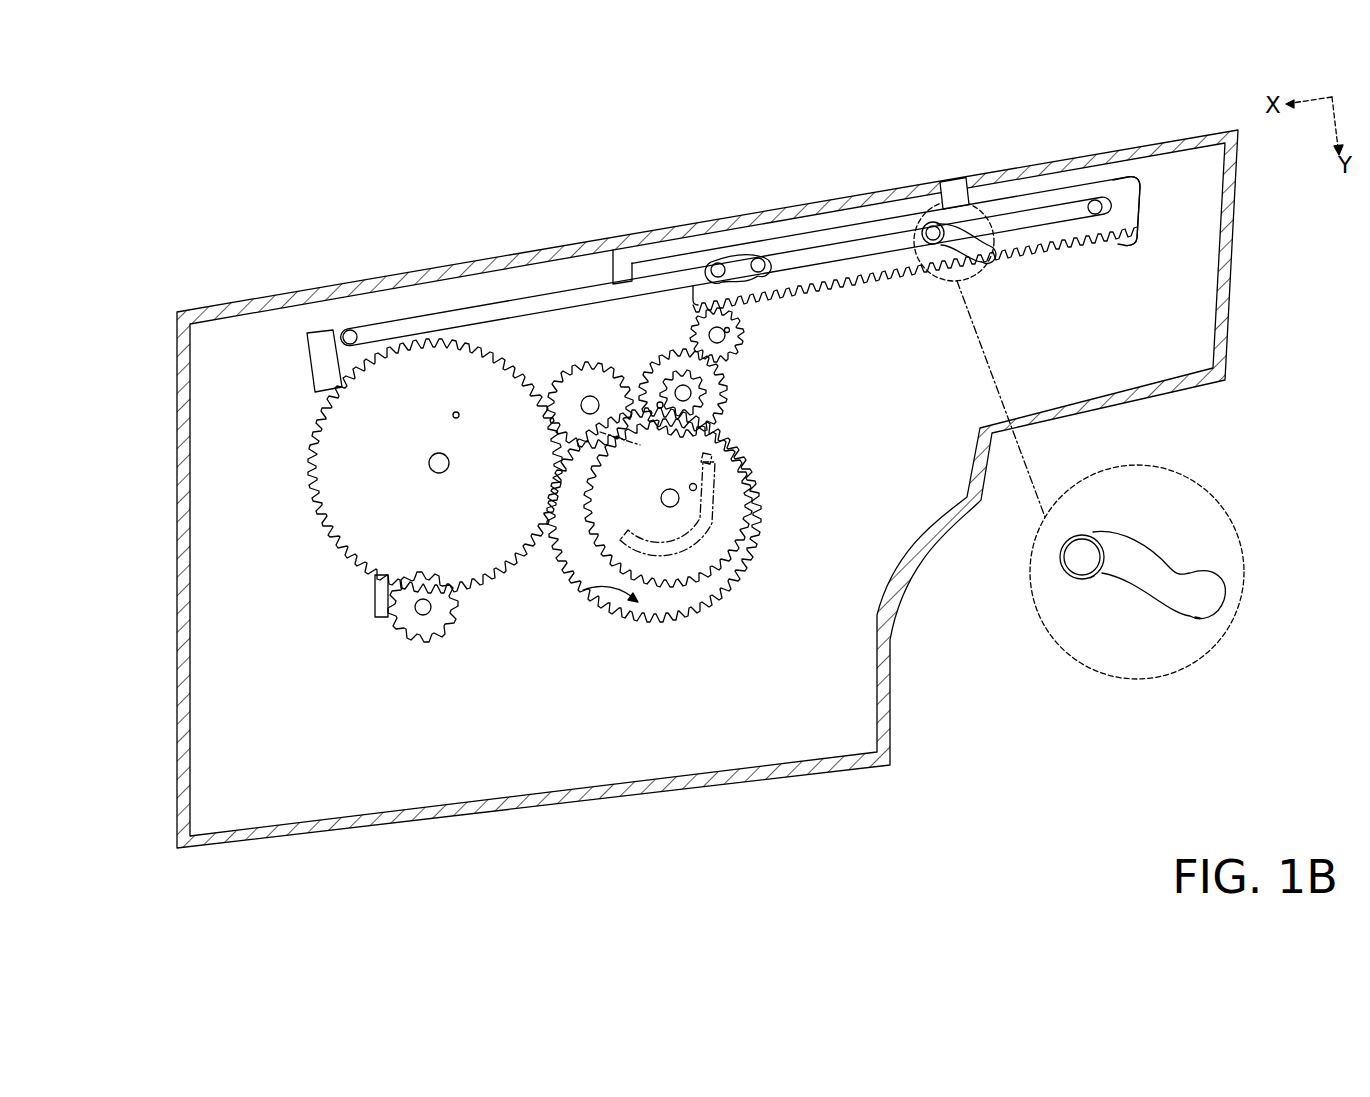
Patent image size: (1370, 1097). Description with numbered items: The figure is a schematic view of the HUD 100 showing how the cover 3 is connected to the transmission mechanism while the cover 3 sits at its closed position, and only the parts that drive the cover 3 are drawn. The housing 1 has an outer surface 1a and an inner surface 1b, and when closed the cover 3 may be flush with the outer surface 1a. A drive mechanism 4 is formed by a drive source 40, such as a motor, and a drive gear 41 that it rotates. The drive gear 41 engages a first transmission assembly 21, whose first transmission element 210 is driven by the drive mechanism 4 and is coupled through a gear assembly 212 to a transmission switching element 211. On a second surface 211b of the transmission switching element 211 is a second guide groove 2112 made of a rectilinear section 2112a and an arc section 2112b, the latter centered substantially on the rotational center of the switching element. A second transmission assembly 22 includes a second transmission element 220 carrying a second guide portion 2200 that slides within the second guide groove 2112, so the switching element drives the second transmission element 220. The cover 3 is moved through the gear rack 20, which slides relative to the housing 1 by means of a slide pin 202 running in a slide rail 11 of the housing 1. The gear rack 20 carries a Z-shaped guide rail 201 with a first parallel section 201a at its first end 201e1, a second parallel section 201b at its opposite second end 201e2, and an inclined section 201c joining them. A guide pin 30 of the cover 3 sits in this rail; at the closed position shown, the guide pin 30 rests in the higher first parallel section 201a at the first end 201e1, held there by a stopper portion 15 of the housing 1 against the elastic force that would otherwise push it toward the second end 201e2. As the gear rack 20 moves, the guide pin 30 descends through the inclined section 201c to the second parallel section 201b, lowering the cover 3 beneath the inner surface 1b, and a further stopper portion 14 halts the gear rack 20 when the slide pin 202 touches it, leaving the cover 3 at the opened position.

The HUD 100 is at (165, 186).
The housing 1 is at (1224, 300).
The outer surface 1a is at (1154, 142).
The inner surface 1b is at (1156, 160).
The stopper portion 14 is at (322, 346).
The cover 3 is at (791, 196).
The slide rail 11 is at (1062, 203).
The slide pin 202 is at (757, 258).
The guide pin 30 is at (931, 226).
The stopper portion 15 is at (951, 182).
The second transmission assembly 22 is at (672, 157).
The second transmission element 220 is at (638, 445).
The gear rack 20 is at (707, 257).
The second guide portion 2200 is at (680, 366).
The drive mechanism 4 is at (113, 513).
The drive source 40 is at (315, 373).
The drive gear 41 is at (407, 627).
The first transmission assembly 21 is at (570, 865).
The first transmission element 210 is at (473, 558).
The transmission switching element 211 is at (588, 567).
The gear assembly 212 is at (582, 422).
The second surface 211b is at (583, 590).
The second guide groove 2112 is at (700, 861).
The rectilinear section 2112a is at (710, 477).
The arc section 2112b is at (695, 575).
The guide rail 201 is at (982, 246).
The first parallel section 201a is at (1090, 578).
The second parallel section 201b is at (1195, 617).
The inclined section 201c is at (1127, 593).
The first end 201e1 is at (1056, 560).
The second end 201e2 is at (1232, 590).